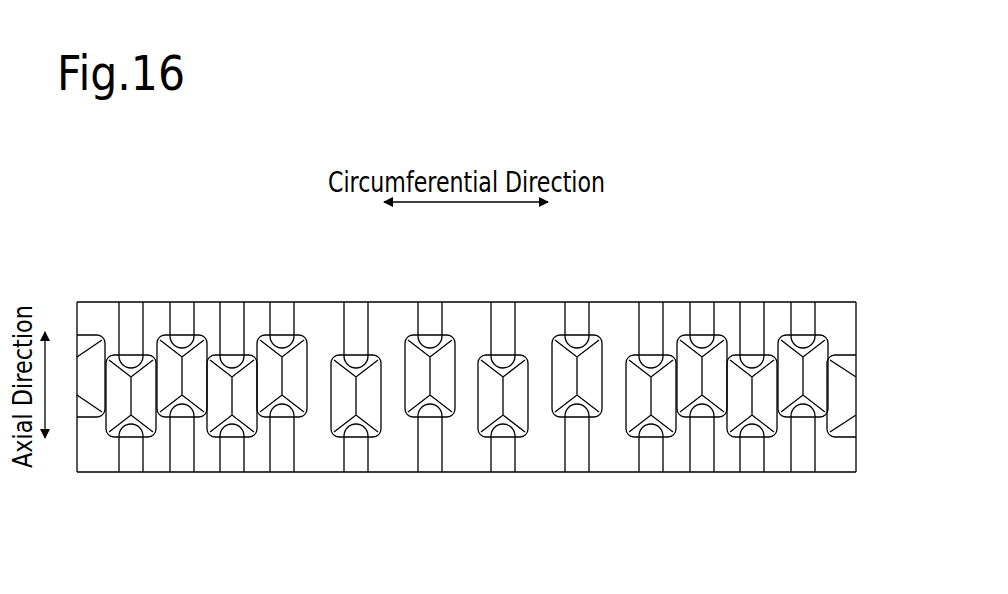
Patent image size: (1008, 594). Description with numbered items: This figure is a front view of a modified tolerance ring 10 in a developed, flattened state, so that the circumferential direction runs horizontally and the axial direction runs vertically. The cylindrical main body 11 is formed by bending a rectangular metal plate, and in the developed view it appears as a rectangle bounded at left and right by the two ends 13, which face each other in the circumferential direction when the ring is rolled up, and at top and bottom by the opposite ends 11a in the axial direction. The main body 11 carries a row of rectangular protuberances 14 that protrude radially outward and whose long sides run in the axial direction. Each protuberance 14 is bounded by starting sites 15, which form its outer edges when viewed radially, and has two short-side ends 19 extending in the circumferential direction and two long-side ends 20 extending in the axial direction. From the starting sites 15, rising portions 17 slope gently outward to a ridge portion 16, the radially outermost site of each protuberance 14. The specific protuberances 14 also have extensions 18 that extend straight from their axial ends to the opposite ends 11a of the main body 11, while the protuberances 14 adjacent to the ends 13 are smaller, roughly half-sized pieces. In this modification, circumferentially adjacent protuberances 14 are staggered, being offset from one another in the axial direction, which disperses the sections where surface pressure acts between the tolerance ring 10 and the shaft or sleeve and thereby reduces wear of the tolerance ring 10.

The tolerance ring 10 is at (152, 205).
The main body 11 is at (248, 302).
The opposite ends in the axial direction of the main body 11a is at (315, 302).
The ends 13 is at (77, 312).
The protuberances 14 is at (87, 333).
The starting sites 15 is at (604, 358).
The ridge portion 16 is at (553, 372).
The rising portions 17 is at (565, 413).
The extensions 18 is at (575, 316).
The short-side ends 19 is at (592, 338).
The long-side ends 20 is at (606, 387).